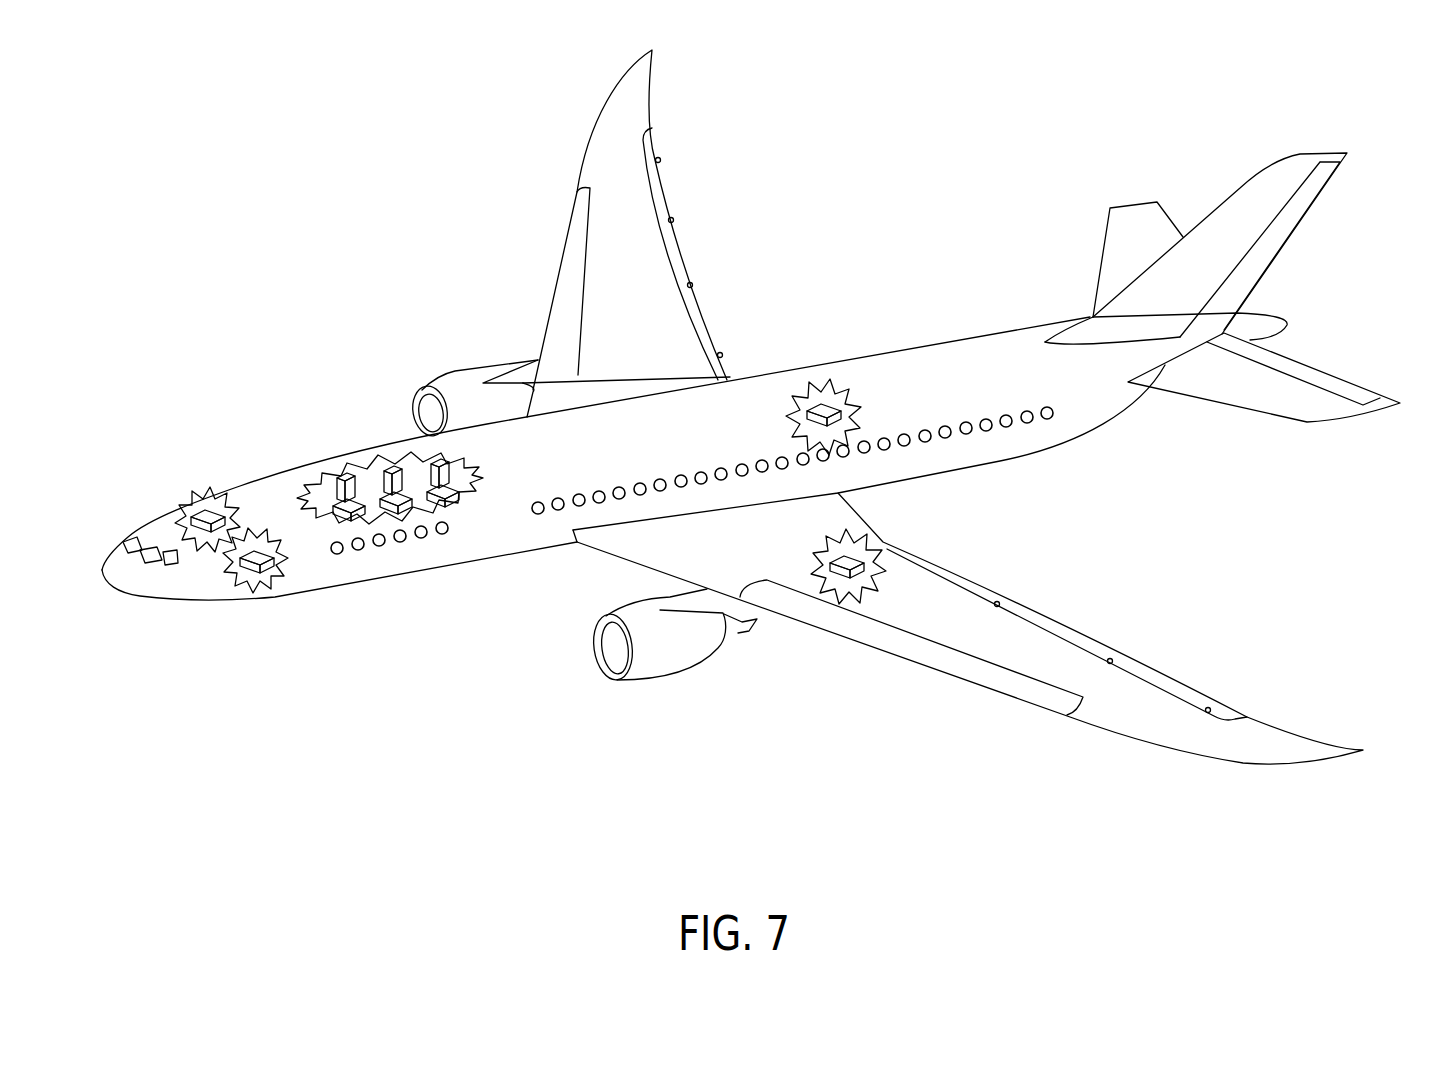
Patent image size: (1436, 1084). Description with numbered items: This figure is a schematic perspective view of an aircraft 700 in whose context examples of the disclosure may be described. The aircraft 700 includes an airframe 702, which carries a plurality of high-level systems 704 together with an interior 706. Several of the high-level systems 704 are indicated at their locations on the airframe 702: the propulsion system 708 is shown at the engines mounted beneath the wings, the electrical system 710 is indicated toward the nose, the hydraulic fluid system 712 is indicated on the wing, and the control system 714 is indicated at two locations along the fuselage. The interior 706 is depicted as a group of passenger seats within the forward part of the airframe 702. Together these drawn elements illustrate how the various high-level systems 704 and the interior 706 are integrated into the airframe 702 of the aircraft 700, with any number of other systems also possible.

The aircraft 700 is at (248, 195).
The airframe 702 is at (368, 404).
The high-level systems 704 is at (943, 292).
The interior 706 is at (342, 472).
The propulsion system 708 is at (457, 385).
The electrical system 710 is at (258, 548).
The hydraulic fluid system 712 is at (850, 557).
The control system 714 is at (200, 512).